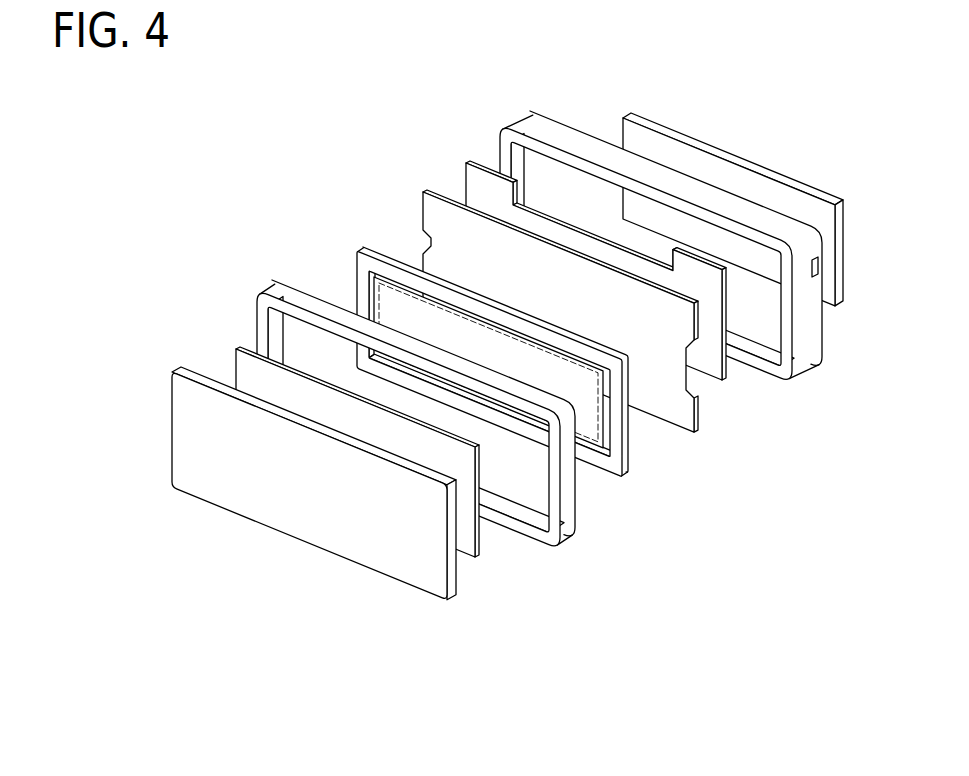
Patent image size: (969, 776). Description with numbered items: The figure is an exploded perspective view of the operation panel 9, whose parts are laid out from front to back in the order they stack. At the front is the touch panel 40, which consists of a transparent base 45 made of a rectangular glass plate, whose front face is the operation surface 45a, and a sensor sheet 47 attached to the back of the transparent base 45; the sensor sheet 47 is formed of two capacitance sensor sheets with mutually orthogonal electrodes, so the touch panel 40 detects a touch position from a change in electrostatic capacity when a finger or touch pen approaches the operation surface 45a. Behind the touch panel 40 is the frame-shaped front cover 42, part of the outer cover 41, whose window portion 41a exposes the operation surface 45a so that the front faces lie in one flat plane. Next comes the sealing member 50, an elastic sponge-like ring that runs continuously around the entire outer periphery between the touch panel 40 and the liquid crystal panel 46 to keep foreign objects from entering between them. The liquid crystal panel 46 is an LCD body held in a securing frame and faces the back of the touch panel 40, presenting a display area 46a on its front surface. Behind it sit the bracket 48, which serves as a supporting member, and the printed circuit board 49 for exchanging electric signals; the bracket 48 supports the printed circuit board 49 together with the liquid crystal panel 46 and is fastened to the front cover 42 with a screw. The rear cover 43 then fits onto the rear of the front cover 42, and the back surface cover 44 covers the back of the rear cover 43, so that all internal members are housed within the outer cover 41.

The operation panel 9 is at (658, 535).
The touch panel 40 is at (217, 311).
The outer cover 41 is at (391, 53).
The window portion 41a is at (272, 324).
The front cover 42 is at (395, 344).
The rear cover 43 is at (527, 128).
The back surface cover 44 is at (628, 136).
The transparent base 45 is at (295, 456).
The operation surface 45a is at (227, 485).
The liquid crystal panel 46 is at (520, 311).
The display area 46a is at (452, 317).
The sensor sheet 47 is at (241, 377).
The bracket 48 is at (696, 381).
The printed circuit board 49 is at (727, 308).
The sealing member 50 is at (398, 282).